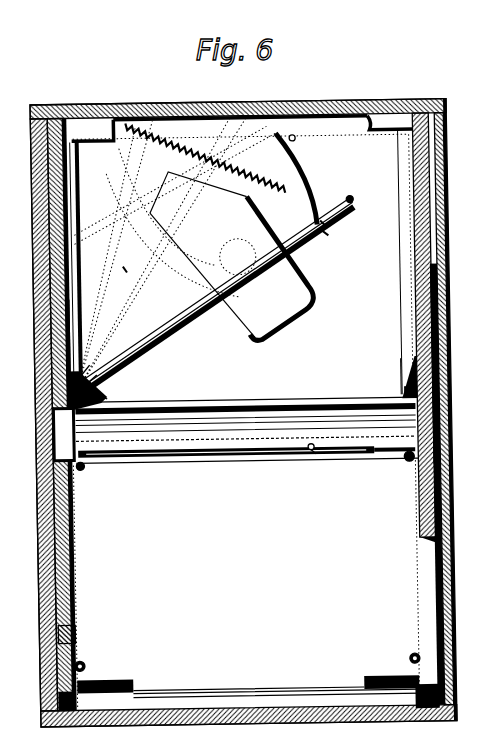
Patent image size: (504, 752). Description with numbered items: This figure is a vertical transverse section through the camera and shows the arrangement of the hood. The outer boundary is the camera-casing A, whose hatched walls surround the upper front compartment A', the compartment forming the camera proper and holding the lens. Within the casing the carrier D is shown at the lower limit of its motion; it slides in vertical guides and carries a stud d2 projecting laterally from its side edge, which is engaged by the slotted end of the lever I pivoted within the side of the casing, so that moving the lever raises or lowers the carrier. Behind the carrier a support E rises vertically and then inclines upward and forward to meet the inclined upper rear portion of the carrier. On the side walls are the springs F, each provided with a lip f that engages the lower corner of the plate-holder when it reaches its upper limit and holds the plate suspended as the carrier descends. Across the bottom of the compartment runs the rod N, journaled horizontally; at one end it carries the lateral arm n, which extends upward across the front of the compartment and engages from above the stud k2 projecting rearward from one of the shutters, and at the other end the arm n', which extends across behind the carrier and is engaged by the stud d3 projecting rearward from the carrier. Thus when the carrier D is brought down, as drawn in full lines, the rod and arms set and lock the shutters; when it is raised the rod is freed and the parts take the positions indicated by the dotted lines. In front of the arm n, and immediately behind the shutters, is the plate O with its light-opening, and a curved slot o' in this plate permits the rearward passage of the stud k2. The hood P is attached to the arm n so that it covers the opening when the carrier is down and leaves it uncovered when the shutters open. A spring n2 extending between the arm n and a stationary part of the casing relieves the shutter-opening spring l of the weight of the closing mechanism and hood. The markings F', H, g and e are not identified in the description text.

The camera-casing A is at (243, 412).
The upper front compartment A' is at (238, 101).
The plate O is at (243, 256).
The spring n2 is at (214, 181).
The curved slot o' is at (300, 178).
The lateral arm n is at (215, 290).
The stud k2 is at (326, 238).
The hood P is at (231, 256).
The pivot disc g is at (237, 253).
The shutter-opening spring l is at (123, 274).
The support E is at (76, 382).
The lip f is at (253, 393).
The left guide strip F' is at (39, 359).
The spring F is at (449, 363).
The bracket H is at (398, 383).
The rod N is at (32, 437).
The lateral arm n' is at (245, 465).
The stud d3 is at (303, 458).
The carrier D is at (256, 587).
The lever I is at (440, 552).
The stud d2 is at (437, 567).
The roller e is at (104, 683).